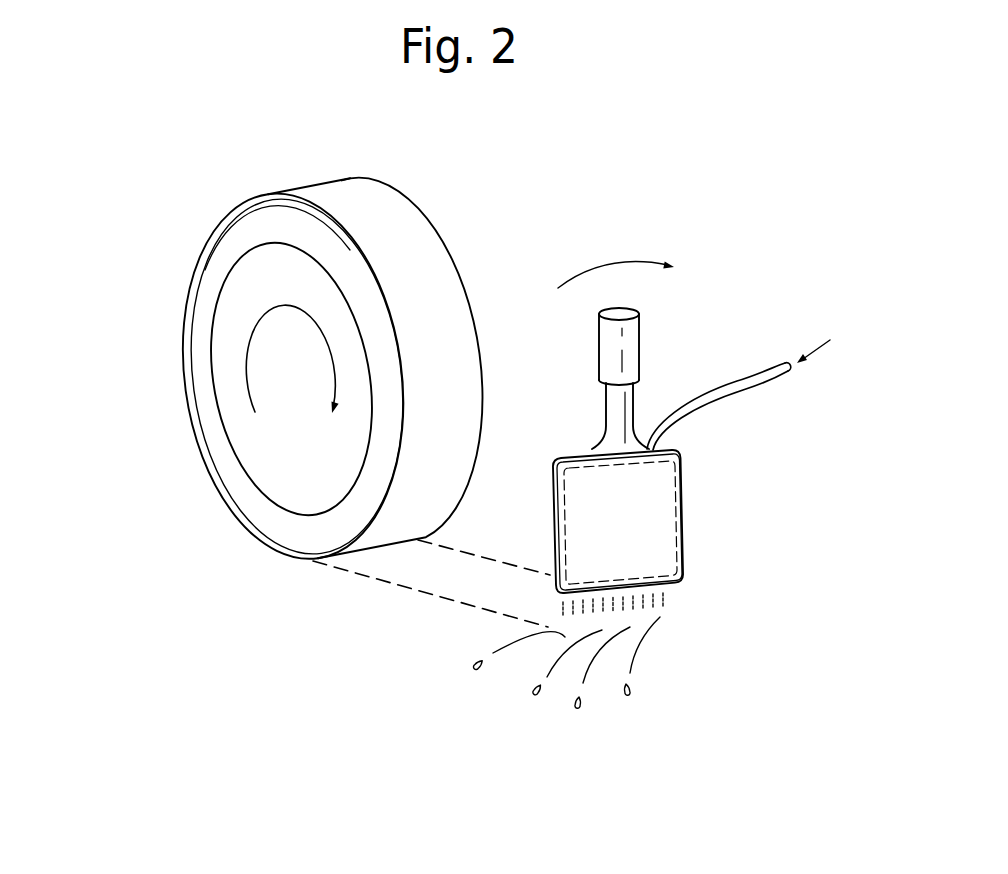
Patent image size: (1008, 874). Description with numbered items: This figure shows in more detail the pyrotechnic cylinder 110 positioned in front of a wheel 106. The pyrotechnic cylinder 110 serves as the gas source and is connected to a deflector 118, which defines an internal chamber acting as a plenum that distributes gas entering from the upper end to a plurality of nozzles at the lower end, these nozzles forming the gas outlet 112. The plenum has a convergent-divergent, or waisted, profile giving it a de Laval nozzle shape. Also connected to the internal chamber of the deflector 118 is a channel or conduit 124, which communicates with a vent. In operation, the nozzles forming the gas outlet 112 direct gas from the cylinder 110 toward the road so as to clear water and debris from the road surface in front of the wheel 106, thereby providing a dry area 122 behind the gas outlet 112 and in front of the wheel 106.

The wheel 106 is at (230, 317).
The pyrotechnic cylinder 110 is at (628, 343).
The gas outlet 112 is at (662, 600).
The deflector 118 is at (647, 528).
The dry area 122 is at (463, 583).
The conduit 124 is at (781, 380).